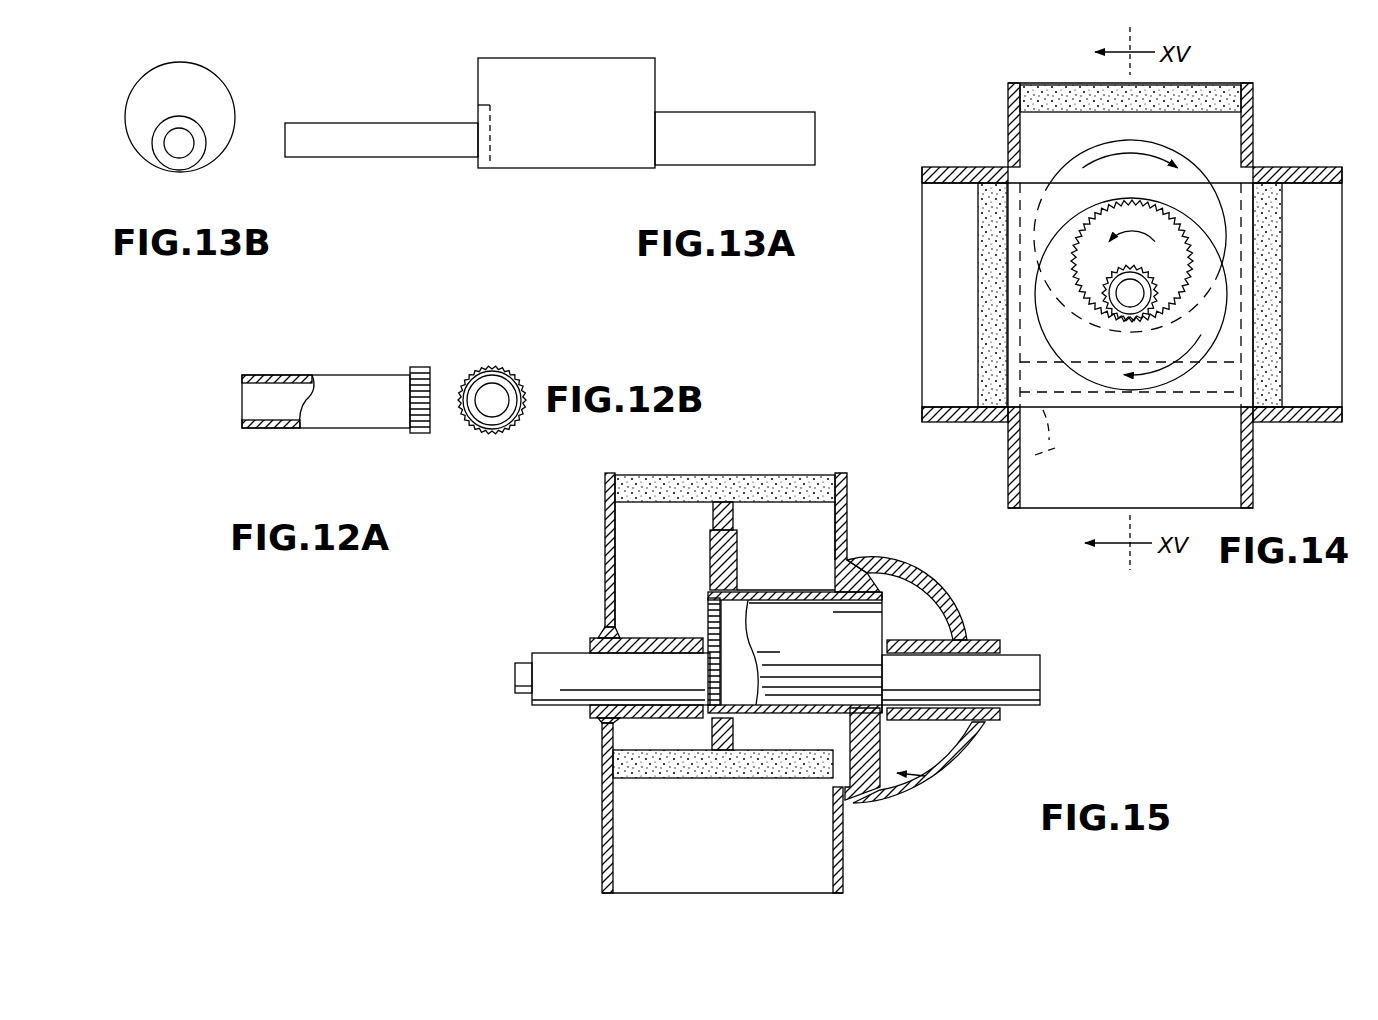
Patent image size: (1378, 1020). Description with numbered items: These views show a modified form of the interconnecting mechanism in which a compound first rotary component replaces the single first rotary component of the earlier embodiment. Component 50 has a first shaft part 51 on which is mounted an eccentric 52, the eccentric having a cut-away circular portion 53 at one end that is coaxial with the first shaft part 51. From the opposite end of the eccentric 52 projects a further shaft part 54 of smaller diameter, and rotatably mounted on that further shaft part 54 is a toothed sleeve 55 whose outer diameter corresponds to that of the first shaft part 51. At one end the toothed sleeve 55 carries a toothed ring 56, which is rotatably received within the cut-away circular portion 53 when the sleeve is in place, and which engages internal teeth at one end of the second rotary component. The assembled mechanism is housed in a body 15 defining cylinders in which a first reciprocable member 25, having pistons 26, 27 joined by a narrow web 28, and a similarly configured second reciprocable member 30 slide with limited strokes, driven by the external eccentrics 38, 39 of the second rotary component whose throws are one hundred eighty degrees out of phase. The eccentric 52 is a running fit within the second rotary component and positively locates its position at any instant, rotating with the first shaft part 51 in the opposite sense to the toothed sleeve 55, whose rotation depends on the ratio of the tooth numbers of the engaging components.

In FIG. 14, the body 15 is at (1262, 173).
In FIG. 15, the body 15 is at (603, 832).
In FIG. 14, the first reciprocable member 25 is at (1045, 130).
In FIG. 15, the first reciprocable member 25 is at (708, 516).
In FIG. 14, the piston 26 is at (1222, 90).
In FIG. 15, the piston 26 is at (795, 500).
In FIG. 14, the piston 27 is at (1030, 442).
In FIG. 15, the piston 27 is at (662, 762).
In FIG. 15, the web 28 is at (912, 566).
In FIG. 14, the second reciprocable member 30 is at (1270, 352).
In FIG. 15, the second reciprocable member 30 is at (922, 786).
In FIG. 14, the external eccentric 38 is at (1077, 165).
In FIG. 14, the external eccentric 39 is at (1055, 248).
In FIG. 13A, the component 50 is at (556, 143).
In FIG. 13A, the first shaft part 51 is at (757, 145).
In FIG. 15, the first shaft part 51 is at (1005, 692).
In FIG. 13B, the eccentric 52 is at (220, 90).
In FIG. 13A, the eccentric 52 is at (553, 135).
In FIG. 14, the eccentric 52 is at (1167, 230).
In FIG. 13B, the cut-away circular portion 53 is at (200, 150).
In FIG. 13A, the cut-away circular portion 53 is at (470, 112).
In FIG. 13B, the further shaft part 54 is at (176, 150).
In FIG. 13A, the further shaft part 54 is at (352, 143).
In FIG. 14, the further shaft part 54 is at (1125, 300).
In FIG. 15, the further shaft part 54 is at (520, 678).
In FIG. 12A, the toothed sleeve 55 is at (360, 403).
In FIG. 12B, the toothed sleeve 55 is at (497, 418).
In FIG. 14, the toothed sleeve 55 is at (1137, 317).
In FIG. 15, the toothed sleeve 55 is at (560, 665).
In FIG. 12A, the toothed ring 56 is at (418, 432).
In FIG. 12B, the toothed ring 56 is at (517, 375).
In FIG. 14, the toothed ring 56 is at (1153, 283).
In FIG. 15, the toothed ring 56 is at (708, 670).